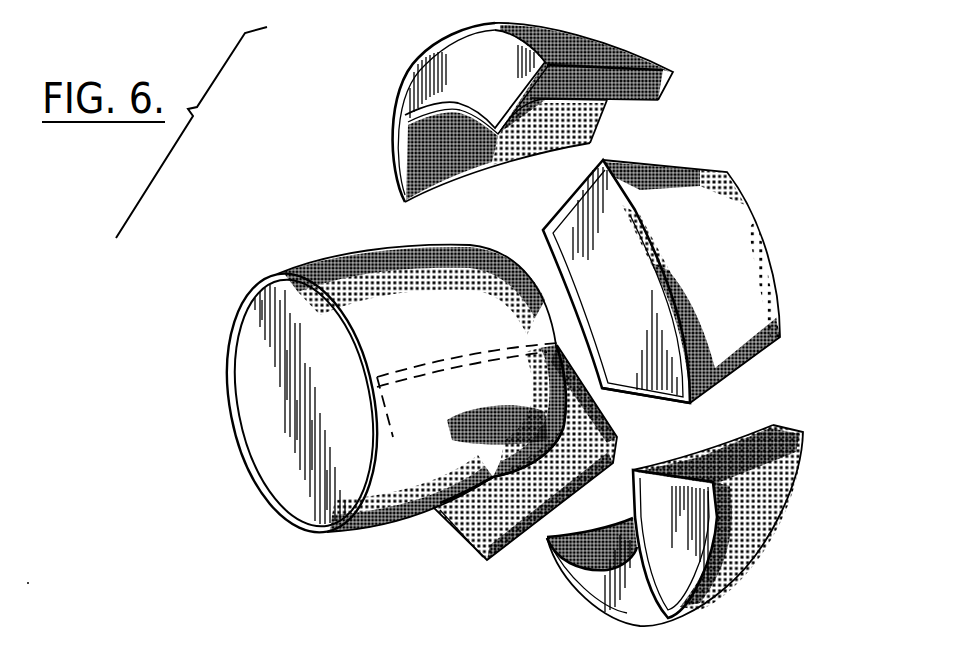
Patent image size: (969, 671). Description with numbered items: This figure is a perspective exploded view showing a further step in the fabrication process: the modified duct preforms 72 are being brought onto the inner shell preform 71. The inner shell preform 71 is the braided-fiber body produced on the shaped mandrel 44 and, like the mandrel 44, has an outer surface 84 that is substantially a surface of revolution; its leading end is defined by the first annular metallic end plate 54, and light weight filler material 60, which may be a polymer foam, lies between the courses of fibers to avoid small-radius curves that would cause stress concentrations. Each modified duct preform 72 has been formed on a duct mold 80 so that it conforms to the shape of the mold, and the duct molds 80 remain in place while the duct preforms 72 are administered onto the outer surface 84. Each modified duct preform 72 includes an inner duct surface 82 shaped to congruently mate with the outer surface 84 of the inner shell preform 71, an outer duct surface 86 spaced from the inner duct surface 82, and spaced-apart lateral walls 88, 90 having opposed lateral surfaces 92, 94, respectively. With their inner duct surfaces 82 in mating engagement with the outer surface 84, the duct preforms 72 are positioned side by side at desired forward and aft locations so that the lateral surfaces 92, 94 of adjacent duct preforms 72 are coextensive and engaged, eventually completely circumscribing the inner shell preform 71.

The shaped mandrel 44 is at (267, 393).
The first annular metallic end plate 54 is at (127, 670).
The light weight filler material 60 is at (197, 670).
The inner shell preform 71 is at (272, 256).
The modified duct preform 72 is at (768, 197).
The duct mold 80 is at (448, 63).
The inner duct surface 82 is at (550, 246).
The outer surface of the inner shell preform 84 is at (348, 255).
The outer duct surface 86 is at (757, 267).
The lateral wall 88 is at (580, 187).
The lateral wall 90 is at (670, 404).
The lateral surface 92 is at (770, 427).
The lateral surface 94 is at (668, 78).